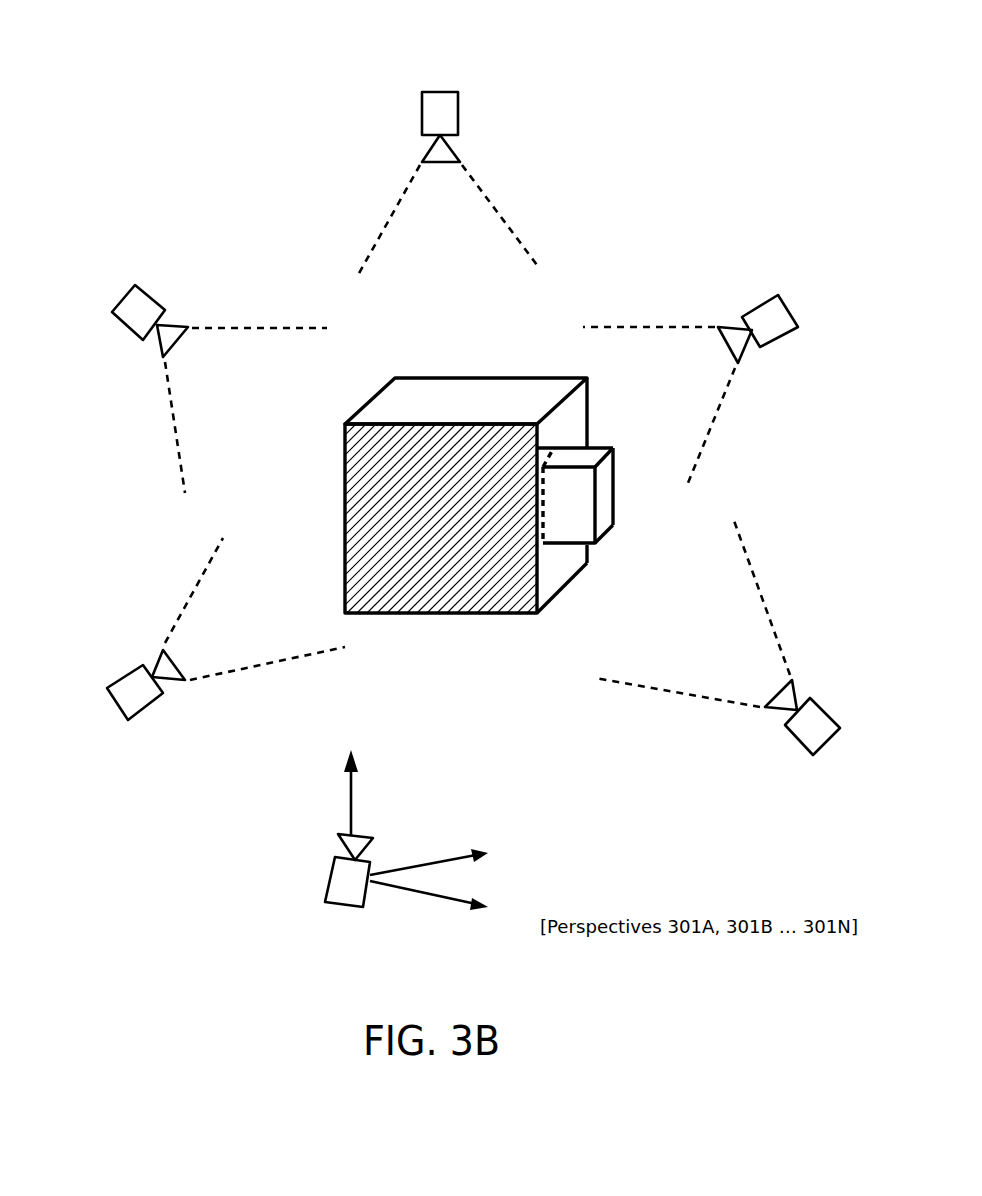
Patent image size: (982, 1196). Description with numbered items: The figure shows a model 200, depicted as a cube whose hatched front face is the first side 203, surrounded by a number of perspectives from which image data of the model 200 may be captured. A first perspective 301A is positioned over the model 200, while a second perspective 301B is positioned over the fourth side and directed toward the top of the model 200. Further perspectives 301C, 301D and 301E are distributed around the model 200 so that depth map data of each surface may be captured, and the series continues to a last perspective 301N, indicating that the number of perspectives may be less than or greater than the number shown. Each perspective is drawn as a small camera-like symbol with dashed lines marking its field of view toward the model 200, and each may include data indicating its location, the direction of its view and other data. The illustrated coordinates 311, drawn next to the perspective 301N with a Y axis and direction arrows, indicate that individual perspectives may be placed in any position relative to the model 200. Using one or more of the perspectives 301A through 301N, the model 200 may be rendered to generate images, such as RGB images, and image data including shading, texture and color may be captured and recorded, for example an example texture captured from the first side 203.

The model 200 is at (449, 347).
The first side 203 is at (355, 462).
The first perspective 301A is at (437, 100).
The second perspective 301B is at (131, 310).
The perspective 301C is at (772, 312).
The perspective 301D is at (808, 724).
The perspective 301E is at (136, 691).
The perspective 301N is at (348, 893).
The coordinates 311 is at (352, 797).